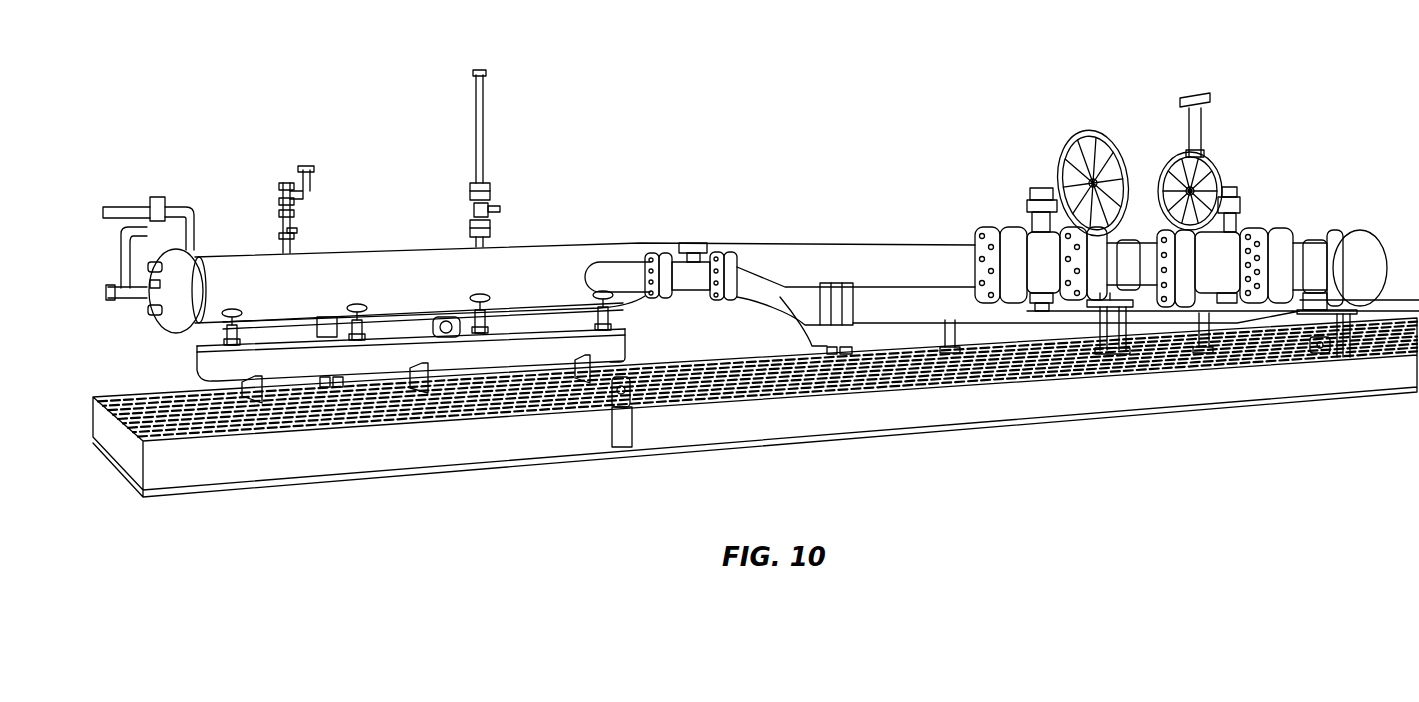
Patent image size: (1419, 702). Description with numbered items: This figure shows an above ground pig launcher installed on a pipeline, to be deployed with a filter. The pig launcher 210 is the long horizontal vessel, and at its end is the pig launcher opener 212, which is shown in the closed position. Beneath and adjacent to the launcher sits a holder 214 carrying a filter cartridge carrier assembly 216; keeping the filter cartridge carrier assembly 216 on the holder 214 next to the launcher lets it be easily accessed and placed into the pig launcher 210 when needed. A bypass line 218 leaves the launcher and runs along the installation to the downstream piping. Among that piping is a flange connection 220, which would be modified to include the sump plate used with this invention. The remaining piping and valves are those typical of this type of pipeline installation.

The pig launcher 210 is at (312, 268).
The pig launcher opener 212 is at (178, 282).
The holder 214 is at (205, 372).
The filter cartridge carrier assembly 216 is at (510, 300).
The bypass line 218 is at (777, 300).
The flange connection 220 is at (1000, 230).